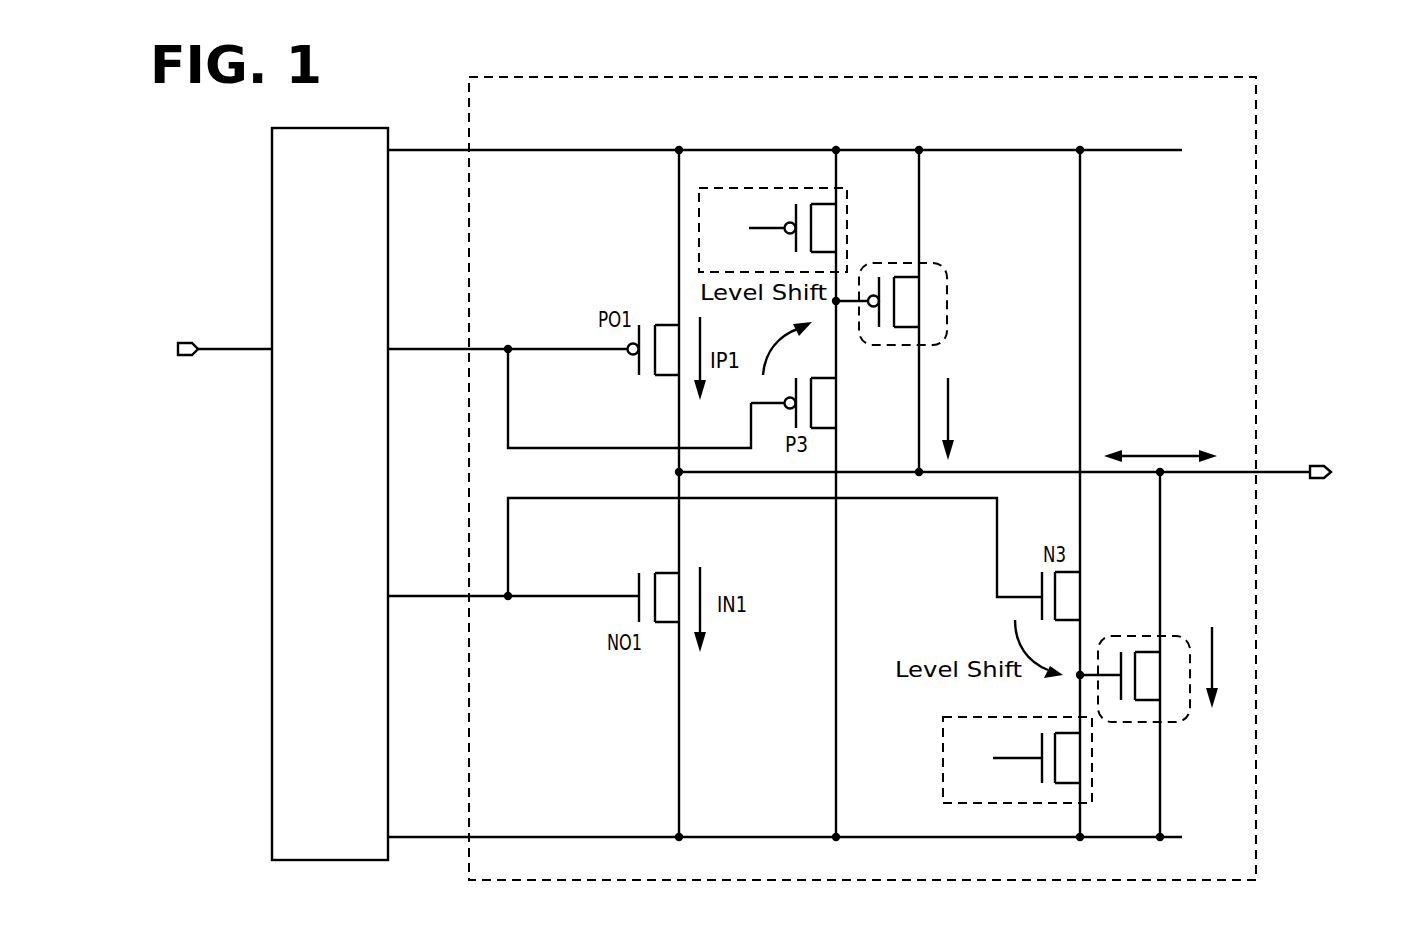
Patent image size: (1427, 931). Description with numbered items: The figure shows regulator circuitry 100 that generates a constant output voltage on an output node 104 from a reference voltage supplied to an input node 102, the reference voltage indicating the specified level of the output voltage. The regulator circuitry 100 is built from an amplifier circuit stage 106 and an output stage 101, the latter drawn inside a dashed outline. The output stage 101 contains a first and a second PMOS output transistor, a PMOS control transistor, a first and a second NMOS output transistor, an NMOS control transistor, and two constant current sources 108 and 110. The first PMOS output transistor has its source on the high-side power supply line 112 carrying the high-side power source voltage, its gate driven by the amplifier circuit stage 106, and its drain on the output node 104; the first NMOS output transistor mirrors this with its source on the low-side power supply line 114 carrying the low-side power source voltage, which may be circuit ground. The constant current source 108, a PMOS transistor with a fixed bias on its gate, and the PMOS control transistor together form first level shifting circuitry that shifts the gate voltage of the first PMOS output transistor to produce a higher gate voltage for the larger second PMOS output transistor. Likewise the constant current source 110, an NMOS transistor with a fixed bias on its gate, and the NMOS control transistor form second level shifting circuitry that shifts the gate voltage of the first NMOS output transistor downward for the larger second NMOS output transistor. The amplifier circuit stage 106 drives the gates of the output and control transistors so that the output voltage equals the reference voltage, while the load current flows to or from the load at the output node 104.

The regulator circuitry 100 is at (1276, 124).
The output stage 101 is at (1184, 230).
The input node 102 is at (180, 343).
The output node 104 is at (1323, 466).
The amplifier circuit stage 106 is at (348, 563).
The constant current source 108 is at (848, 198).
The constant current source 110 is at (943, 730).
The high-side power supply line 112 is at (758, 149).
The low-side power supply line 114 is at (760, 835).